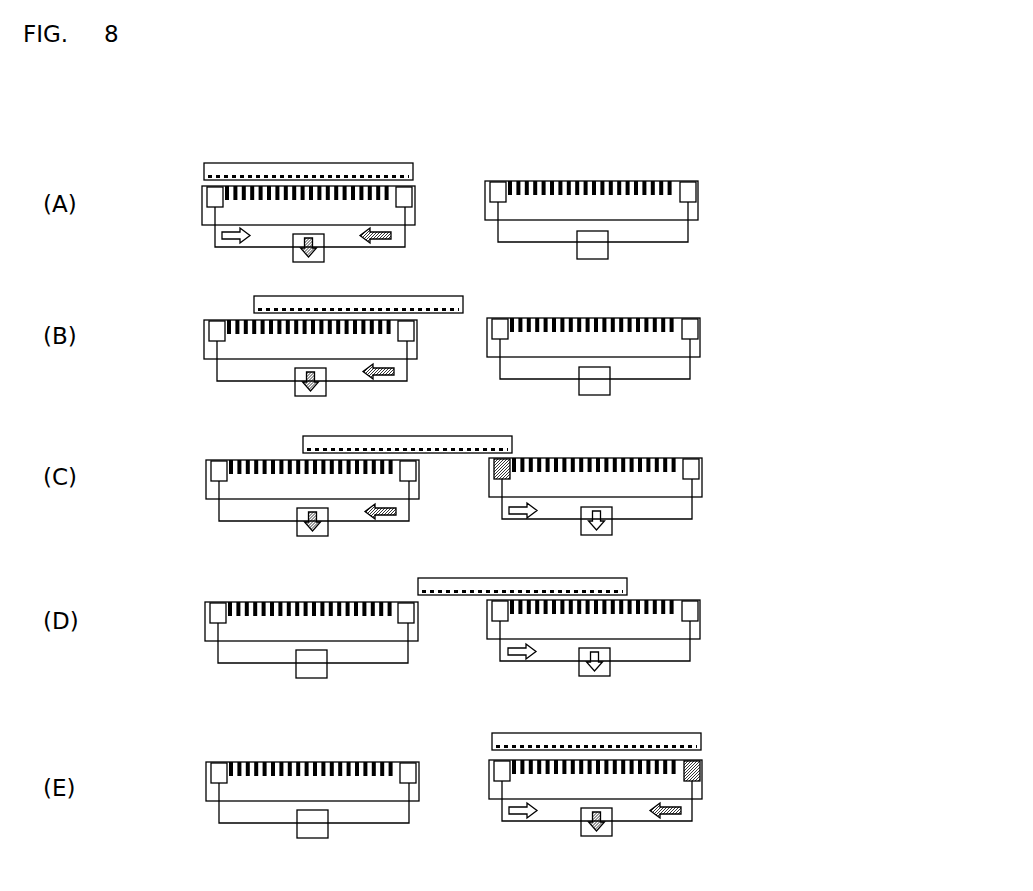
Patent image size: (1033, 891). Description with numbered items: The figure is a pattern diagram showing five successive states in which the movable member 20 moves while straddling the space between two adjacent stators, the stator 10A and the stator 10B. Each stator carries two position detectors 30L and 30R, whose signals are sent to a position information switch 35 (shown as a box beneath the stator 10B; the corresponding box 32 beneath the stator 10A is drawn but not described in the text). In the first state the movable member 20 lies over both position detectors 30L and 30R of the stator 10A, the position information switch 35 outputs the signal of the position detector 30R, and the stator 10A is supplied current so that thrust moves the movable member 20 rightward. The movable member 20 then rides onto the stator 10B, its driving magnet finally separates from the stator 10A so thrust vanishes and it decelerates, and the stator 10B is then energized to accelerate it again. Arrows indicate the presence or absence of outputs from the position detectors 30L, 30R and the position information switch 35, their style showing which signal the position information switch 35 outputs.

The stator 10A is at (196, 214).
The stator 10B is at (712, 197).
The movable member 20 is at (397, 152).
The position detector 30L is at (207, 193).
The position detector 30R is at (413, 190).
The first head drive/control unit 32 is at (407, 237).
The position information switch 35 is at (608, 254).